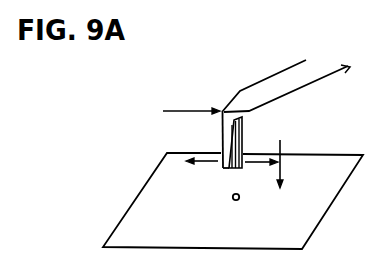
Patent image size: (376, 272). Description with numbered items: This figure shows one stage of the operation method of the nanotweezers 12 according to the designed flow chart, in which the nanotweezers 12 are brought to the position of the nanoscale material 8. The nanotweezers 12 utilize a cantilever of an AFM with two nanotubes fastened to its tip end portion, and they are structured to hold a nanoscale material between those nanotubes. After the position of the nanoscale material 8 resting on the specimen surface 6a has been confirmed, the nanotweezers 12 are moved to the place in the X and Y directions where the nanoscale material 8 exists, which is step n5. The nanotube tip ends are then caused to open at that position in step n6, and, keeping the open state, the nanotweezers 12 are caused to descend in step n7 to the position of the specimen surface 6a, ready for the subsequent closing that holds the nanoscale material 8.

The nanotweezers 12 is at (292, 80).
The specimen surface 6a is at (145, 208).
The nanoscale material 8 is at (239, 200).
The step of moving to the nanoscale material position n5 is at (191, 97).
The step of opening the nanotube tip ends n6 is at (200, 174).
The step of descending to the specimen surface n7 is at (277, 165).